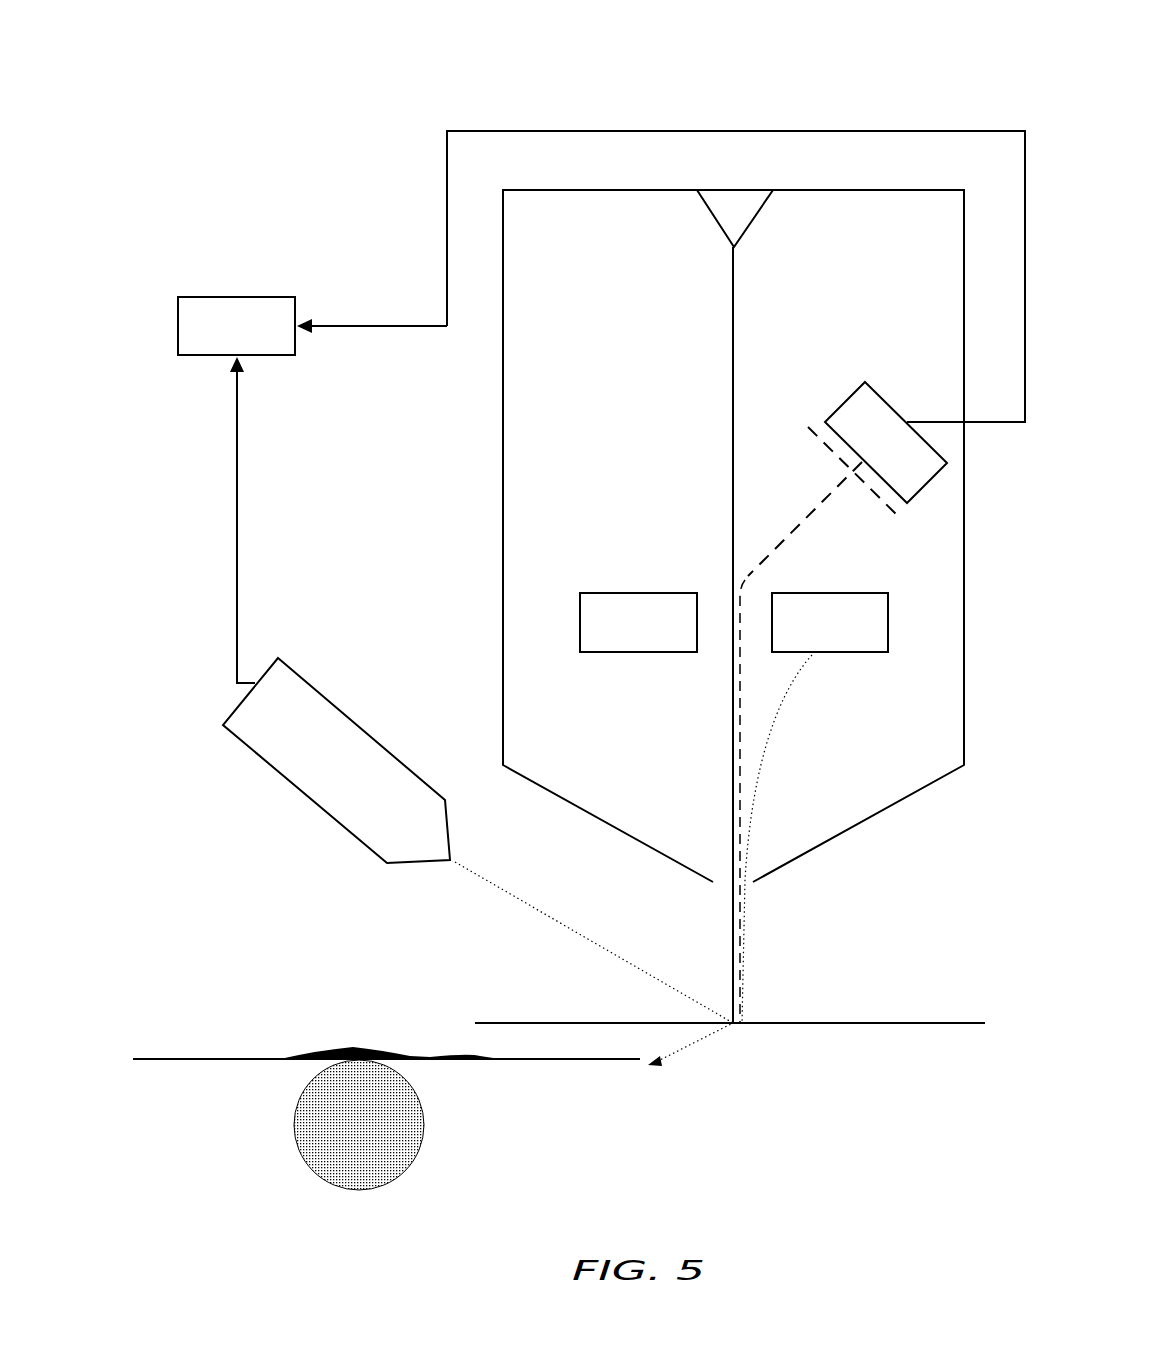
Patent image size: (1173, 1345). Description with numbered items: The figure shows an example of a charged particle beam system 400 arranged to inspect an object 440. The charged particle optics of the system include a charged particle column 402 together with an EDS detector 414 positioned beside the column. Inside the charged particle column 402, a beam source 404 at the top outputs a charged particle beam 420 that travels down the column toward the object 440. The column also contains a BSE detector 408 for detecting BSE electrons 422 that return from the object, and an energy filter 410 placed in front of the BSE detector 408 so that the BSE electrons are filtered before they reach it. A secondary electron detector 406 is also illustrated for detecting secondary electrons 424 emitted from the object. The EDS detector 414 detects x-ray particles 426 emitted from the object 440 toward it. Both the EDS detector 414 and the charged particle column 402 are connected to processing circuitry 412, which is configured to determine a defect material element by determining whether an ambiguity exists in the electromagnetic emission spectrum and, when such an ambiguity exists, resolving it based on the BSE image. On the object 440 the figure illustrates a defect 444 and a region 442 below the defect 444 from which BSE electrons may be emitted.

The charged particle beam system 400 is at (972, 68).
The charged particle column 402 is at (571, 245).
The beam source 404 is at (735, 218).
The secondary electron detector 406 is at (659, 635).
The BSE detector 408 is at (886, 442).
The energy filter 410 is at (897, 516).
The processing circuitry 412 is at (258, 339).
The EDS detector 414 is at (336, 760).
The charged particle beam 420 is at (732, 399).
The BSE electrons 422 is at (753, 570).
The secondary electrons 424 is at (760, 712).
The x-ray particles 426 is at (485, 878).
The object 440 is at (892, 1056).
The region below the defect 442 is at (380, 1139).
The defect 444 is at (362, 1045).